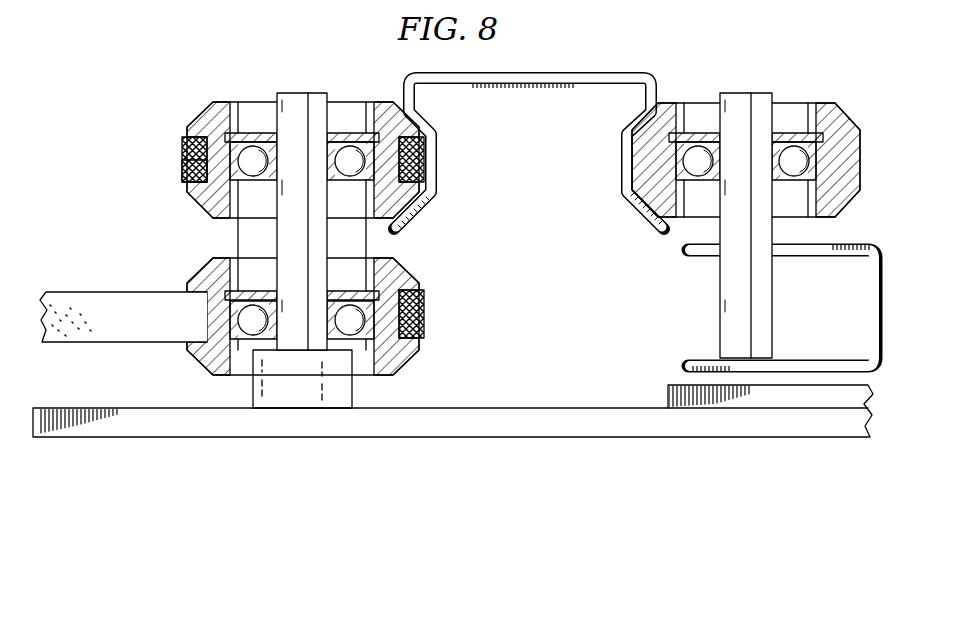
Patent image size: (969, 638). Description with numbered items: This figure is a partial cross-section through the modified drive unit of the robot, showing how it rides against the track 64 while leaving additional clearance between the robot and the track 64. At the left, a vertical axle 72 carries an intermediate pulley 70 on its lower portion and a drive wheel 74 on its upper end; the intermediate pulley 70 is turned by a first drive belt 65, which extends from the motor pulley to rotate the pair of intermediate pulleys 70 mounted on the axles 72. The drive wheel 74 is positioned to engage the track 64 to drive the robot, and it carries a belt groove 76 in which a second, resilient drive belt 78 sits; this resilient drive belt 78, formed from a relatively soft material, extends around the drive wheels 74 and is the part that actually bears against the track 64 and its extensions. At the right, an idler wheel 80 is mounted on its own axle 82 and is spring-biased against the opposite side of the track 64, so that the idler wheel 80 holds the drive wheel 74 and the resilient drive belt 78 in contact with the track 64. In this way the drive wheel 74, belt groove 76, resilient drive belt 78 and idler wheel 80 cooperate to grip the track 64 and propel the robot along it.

The track 64 is at (578, 73).
The first drive belt 65 is at (127, 343).
The intermediate pulley 70 is at (200, 270).
The axle 72 is at (302, 92).
The drive wheel 74 is at (243, 100).
The belt groove 76 is at (182, 173).
The resilient drive belt 78 is at (182, 143).
The idler wheel 80 is at (797, 102).
The axle 82 is at (745, 95).